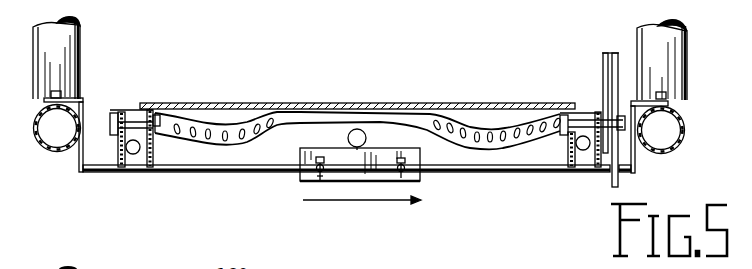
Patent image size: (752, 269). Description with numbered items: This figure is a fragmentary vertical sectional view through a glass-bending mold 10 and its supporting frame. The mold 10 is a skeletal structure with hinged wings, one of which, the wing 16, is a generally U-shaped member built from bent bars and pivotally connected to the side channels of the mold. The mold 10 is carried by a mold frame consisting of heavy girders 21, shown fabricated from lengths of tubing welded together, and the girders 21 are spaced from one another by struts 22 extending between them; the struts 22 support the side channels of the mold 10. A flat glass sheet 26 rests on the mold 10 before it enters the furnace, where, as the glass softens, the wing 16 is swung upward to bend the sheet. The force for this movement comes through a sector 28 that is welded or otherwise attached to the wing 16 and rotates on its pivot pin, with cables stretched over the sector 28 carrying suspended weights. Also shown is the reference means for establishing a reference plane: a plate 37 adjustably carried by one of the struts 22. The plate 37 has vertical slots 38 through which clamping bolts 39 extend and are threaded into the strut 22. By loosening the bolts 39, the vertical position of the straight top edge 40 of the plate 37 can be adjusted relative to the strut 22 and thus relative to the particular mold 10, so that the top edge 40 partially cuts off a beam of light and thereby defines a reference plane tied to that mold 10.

The mold 10 is at (360, 114).
The hinged wing 16 is at (358, 139).
The girder 21 is at (48, 152).
The strut 22 is at (215, 171).
The flat glass sheet 26 is at (392, 107).
The sector 28 is at (603, 65).
The plate 37 is at (377, 166).
The vertical slot 38 is at (325, 181).
The clamping bolt 39 is at (322, 157).
The straight top edge 40 is at (402, 157).